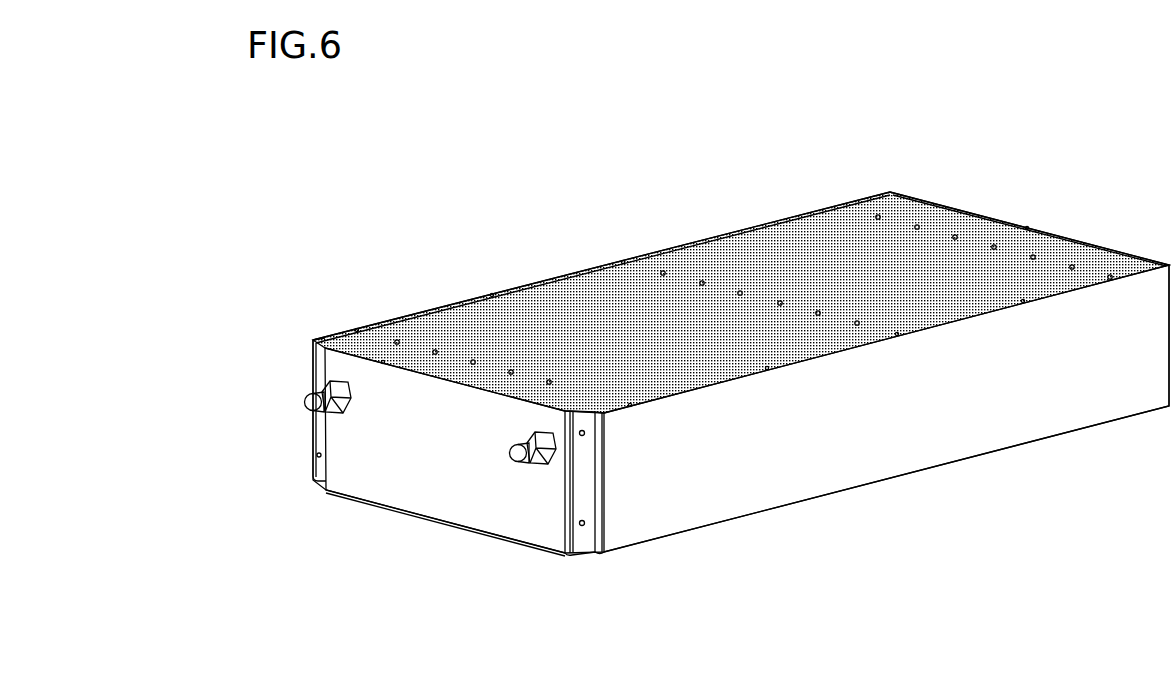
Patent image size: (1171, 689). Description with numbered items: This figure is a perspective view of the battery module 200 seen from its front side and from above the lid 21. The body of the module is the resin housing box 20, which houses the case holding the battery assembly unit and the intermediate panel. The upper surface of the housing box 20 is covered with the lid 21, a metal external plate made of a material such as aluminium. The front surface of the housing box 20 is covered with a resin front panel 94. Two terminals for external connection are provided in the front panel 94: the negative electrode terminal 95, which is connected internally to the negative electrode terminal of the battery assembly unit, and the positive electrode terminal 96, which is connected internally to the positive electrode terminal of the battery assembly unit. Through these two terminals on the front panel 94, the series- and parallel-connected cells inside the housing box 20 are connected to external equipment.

The battery module 200 is at (768, 175).
The lid 21 is at (945, 220).
The housing box 20 is at (945, 457).
The front panel 94 is at (410, 510).
The negative electrode terminal 95 is at (305, 402).
The positive electrode terminal 96 is at (532, 455).